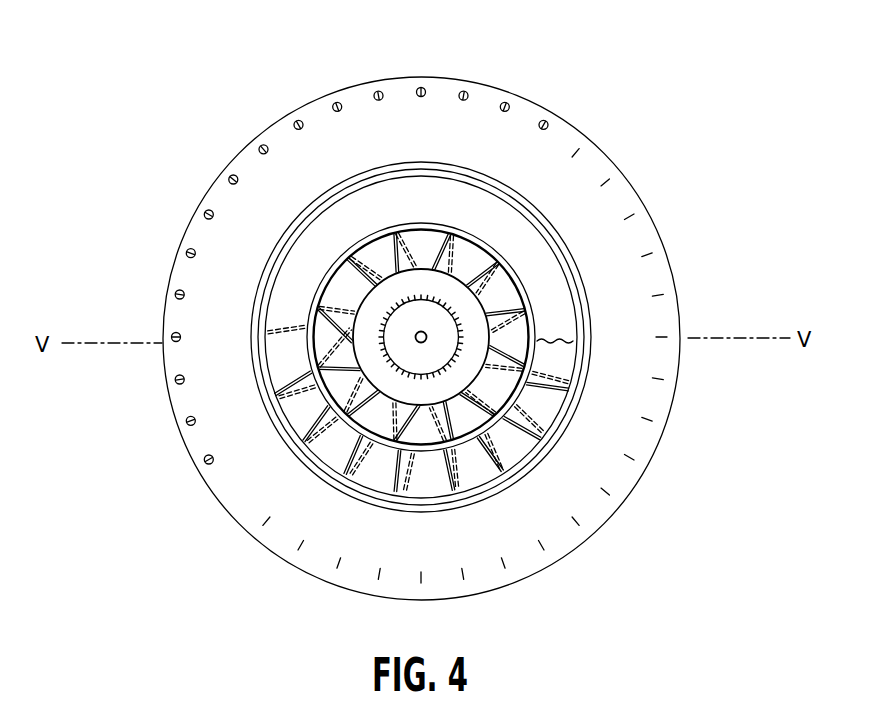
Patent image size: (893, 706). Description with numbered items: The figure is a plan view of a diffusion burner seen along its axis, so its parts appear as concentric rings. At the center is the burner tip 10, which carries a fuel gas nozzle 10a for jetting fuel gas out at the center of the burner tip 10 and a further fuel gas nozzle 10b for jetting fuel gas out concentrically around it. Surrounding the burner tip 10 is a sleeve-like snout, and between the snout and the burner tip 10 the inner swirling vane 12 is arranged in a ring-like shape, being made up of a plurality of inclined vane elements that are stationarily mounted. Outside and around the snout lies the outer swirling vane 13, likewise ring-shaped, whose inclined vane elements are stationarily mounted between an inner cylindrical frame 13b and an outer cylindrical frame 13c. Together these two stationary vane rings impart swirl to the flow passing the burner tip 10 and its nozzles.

The burner tip 10 is at (483, 180).
The fuel gas nozzle 10a is at (421, 337).
The fuel gas nozzle 10b is at (421, 293).
The inner swirling vane 12 is at (378, 420).
The outer swirling vane 13 is at (473, 475).
The inner cylindrical frame 13b is at (453, 293).
The outer cylindrical frame 13c is at (378, 228).